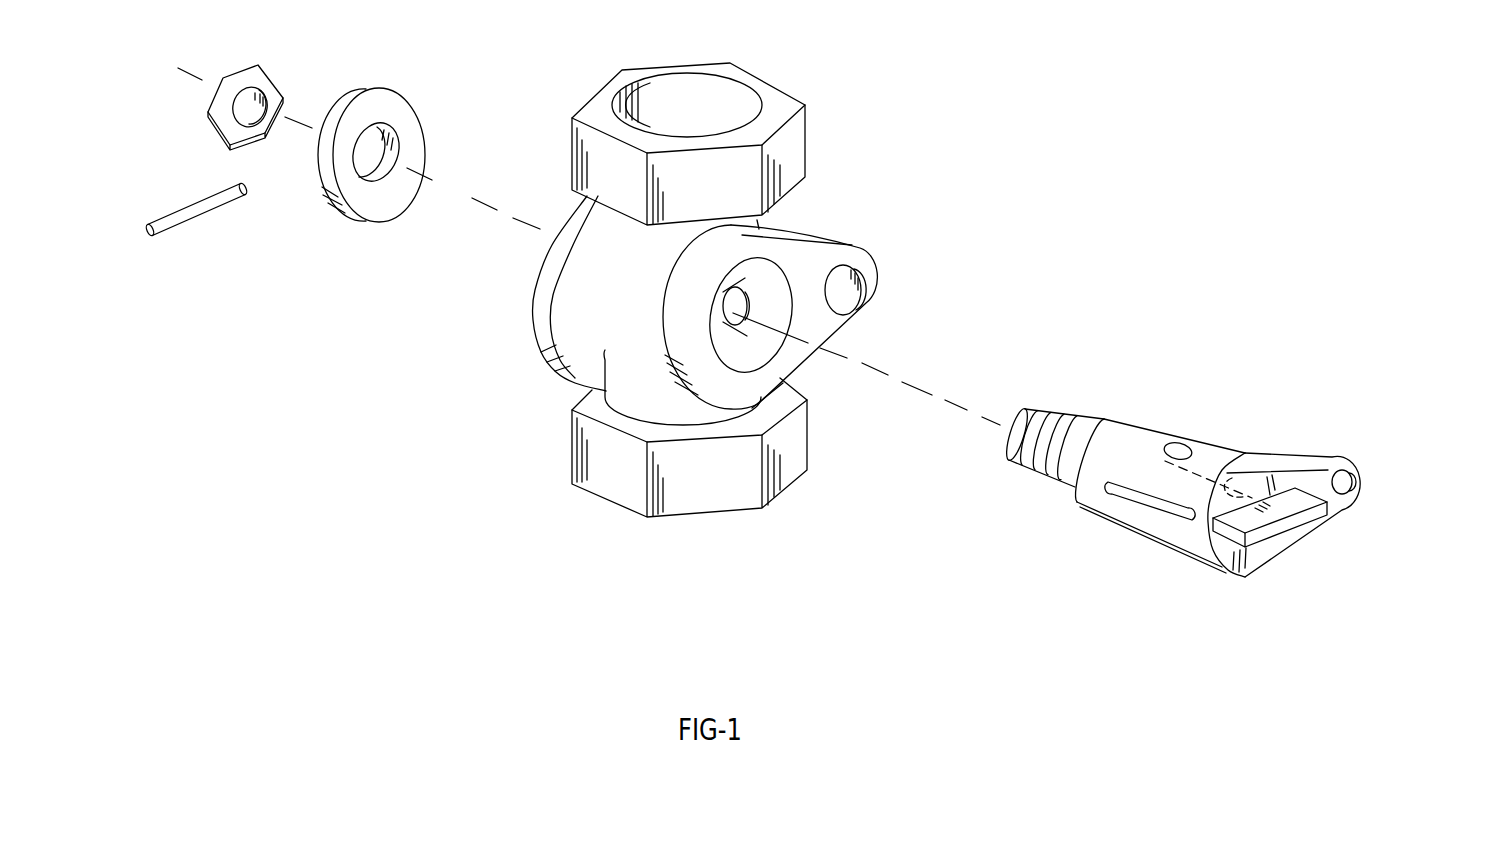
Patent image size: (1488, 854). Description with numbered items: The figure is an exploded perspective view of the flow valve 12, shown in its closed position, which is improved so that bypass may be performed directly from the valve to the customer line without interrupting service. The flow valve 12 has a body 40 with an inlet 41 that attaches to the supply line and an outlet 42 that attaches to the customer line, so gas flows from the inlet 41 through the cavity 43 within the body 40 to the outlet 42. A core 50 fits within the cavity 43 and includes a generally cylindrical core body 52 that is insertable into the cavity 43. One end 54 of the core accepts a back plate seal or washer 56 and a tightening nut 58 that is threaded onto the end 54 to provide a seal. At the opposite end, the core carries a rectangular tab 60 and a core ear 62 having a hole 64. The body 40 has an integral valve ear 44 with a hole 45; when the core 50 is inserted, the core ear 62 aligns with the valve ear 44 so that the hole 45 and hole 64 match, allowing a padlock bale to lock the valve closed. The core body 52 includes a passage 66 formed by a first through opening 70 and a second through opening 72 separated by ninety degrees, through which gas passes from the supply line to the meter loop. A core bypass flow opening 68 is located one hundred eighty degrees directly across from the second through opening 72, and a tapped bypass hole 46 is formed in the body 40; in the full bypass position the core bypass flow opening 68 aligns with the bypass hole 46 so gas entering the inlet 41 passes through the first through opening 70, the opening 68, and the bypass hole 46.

The flow valve 12 is at (493, 362).
The body 40 is at (594, 338).
The inlet 41 is at (705, 490).
The outlet 42 is at (778, 100).
The cavity 43 is at (748, 337).
The valve ear 44 is at (838, 257).
The hole 45 is at (847, 290).
The tapped bypass hole 46 is at (741, 291).
The core 50 is at (1165, 580).
The core body 52 is at (1130, 440).
The end 54 is at (1030, 450).
The back plate seal or washer 56 is at (405, 117).
The tightening nut 58 is at (268, 82).
The rectangular tab 60 is at (1330, 518).
The core ear 62 is at (1323, 470).
The hole 64 is at (1345, 480).
The passage 66 is at (1132, 470).
The core bypass flow opening 68 is at (1117, 492).
The first through opening 70 is at (1178, 452).
The second through opening 72 is at (1220, 478).